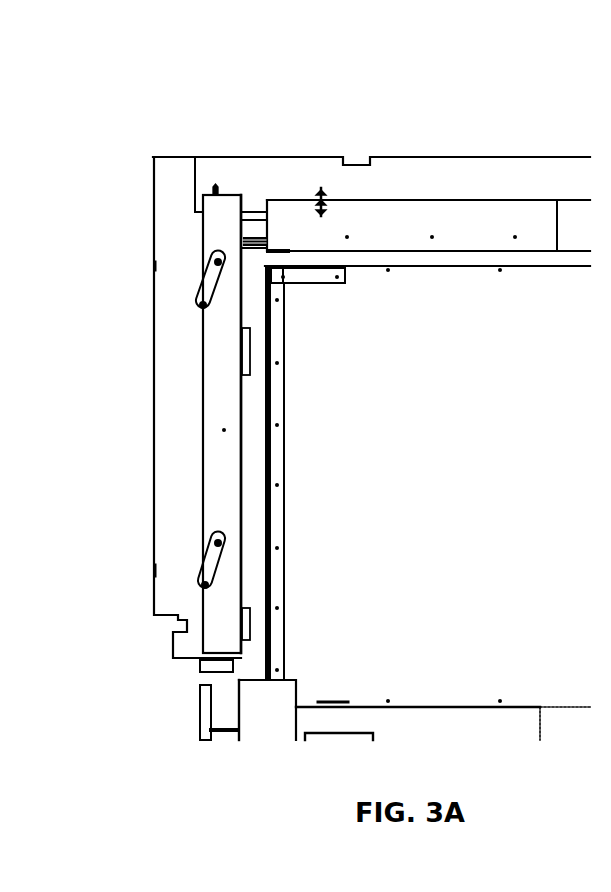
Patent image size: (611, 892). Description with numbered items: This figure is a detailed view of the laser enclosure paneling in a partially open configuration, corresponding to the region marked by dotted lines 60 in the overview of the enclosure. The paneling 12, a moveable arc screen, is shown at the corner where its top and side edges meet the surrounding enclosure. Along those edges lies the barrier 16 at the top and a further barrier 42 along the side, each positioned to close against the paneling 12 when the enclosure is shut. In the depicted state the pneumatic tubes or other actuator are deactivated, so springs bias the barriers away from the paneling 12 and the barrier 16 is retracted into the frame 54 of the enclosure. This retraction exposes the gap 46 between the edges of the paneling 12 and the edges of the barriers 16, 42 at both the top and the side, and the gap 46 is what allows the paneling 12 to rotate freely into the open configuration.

The dotted lines 60 is at (506, 86).
The frame 54 is at (300, 157).
The barrier 16 is at (408, 200).
The paneling 12 is at (427, 473).
The barrier 42 is at (205, 537).
The gap 46 is at (250, 272).